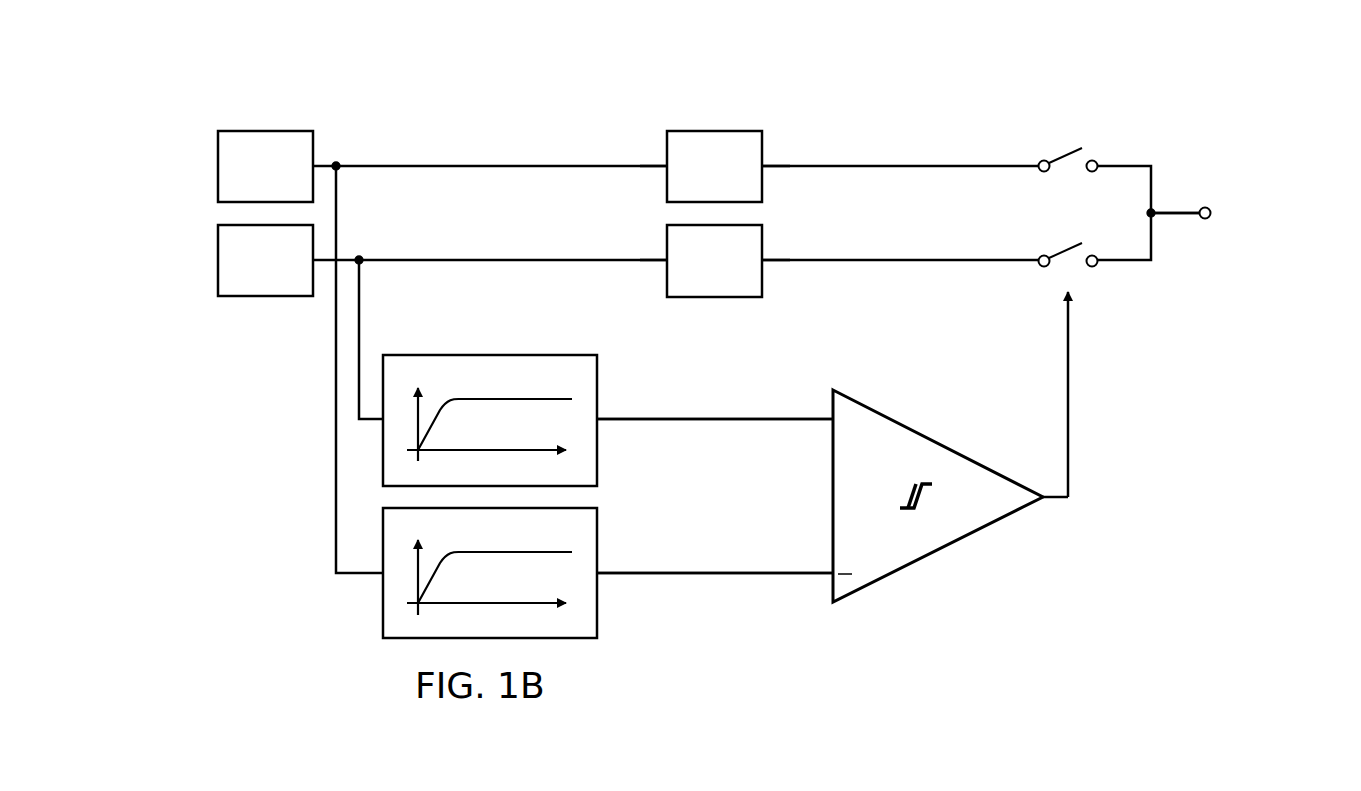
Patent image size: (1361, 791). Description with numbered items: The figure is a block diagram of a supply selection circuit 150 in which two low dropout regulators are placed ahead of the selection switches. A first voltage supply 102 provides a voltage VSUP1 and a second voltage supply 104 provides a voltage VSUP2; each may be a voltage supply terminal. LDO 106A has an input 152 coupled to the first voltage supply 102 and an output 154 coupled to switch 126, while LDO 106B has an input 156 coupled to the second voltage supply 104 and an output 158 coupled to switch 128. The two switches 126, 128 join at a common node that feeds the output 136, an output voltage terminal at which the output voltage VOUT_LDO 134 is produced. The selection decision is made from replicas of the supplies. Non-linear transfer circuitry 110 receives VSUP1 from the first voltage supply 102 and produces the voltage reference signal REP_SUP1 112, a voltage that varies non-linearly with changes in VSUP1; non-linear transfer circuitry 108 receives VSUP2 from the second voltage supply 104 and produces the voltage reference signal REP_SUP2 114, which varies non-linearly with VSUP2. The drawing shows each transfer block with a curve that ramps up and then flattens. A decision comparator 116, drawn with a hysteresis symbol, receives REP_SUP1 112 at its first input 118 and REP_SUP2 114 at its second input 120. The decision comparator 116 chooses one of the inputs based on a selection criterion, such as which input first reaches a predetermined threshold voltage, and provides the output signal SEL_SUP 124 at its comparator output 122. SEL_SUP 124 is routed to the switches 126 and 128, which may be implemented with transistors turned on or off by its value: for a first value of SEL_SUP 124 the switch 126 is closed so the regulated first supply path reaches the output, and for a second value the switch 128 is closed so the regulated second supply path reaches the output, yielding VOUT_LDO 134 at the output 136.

The supply selection circuit 150 is at (490, 83).
The first voltage supply 102 is at (218, 153).
The second voltage supply 104 is at (218, 247).
The LDO 106A is at (714, 131).
The LDO 106B is at (714, 297).
The input 152 is at (665, 158).
The output 154 is at (764, 158).
The input 156 is at (665, 252).
The output 158 is at (764, 252).
The switch 126 is at (1068, 155).
The switch 128 is at (1068, 250).
The output 136 is at (1176, 210).
The output voltage VOUT_LDO 134 is at (1206, 220).
The non-linear transfer circuitry 108 is at (490, 355).
The non-linear transfer circuitry 110 is at (383, 590).
The voltage reference signal REP_SUP2 114 is at (715, 425).
The voltage reference signal REP_SUP1 112 is at (715, 580).
The second input 120 is at (830, 428).
The first input 118 is at (830, 583).
The decision comparator 116 is at (940, 553).
The comparator output 122 is at (1052, 505).
The output signal SEL_SUP 124 is at (1068, 398).